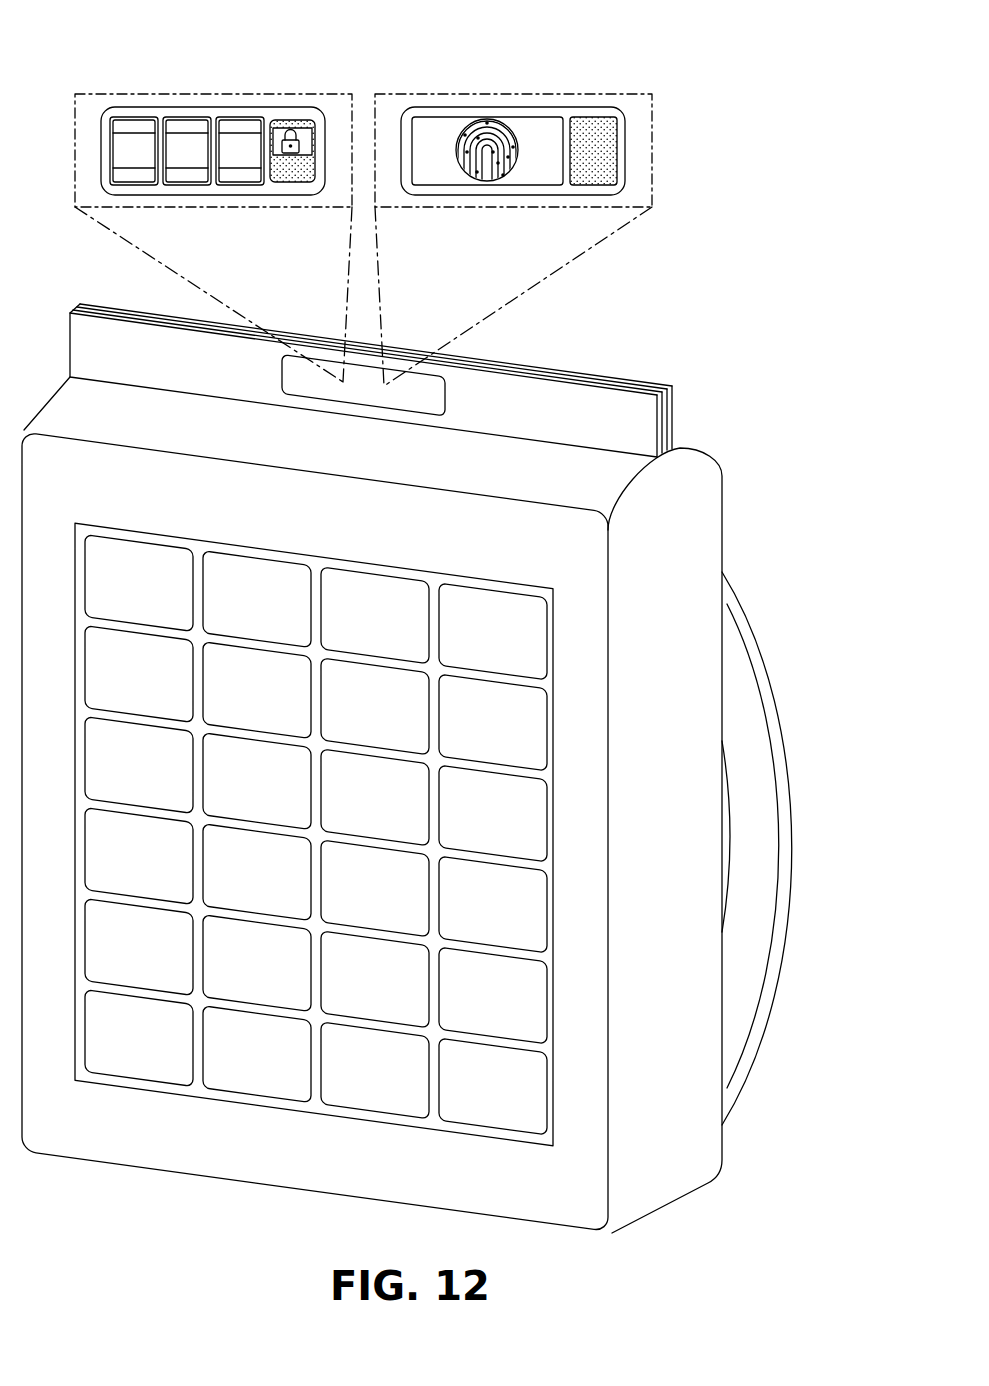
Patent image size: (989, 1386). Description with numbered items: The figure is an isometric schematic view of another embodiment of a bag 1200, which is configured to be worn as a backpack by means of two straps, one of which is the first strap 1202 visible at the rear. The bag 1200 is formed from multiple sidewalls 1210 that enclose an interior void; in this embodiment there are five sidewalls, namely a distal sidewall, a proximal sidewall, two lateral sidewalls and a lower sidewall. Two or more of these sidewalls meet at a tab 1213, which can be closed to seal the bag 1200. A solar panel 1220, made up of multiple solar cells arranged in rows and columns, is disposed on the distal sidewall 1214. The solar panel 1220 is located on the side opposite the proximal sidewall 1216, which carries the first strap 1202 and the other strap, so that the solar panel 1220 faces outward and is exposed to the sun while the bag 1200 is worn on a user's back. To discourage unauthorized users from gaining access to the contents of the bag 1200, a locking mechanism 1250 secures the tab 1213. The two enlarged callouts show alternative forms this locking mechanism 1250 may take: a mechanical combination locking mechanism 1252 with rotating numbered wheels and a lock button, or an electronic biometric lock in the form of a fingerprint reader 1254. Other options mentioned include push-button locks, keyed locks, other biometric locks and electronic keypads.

The bag 1200 is at (678, 324).
The first strap 1202 is at (766, 660).
The sidewalls 1210 is at (668, 1177).
The tab 1213 is at (633, 419).
The distal sidewall 1214 is at (263, 1163).
The proximal sidewall 1216 is at (723, 527).
The solar panel 1220 is at (328, 552).
The locking mechanism 1250 is at (440, 392).
The combination locking mechanism 1252 is at (205, 107).
The fingerprint reader 1254 is at (538, 107).